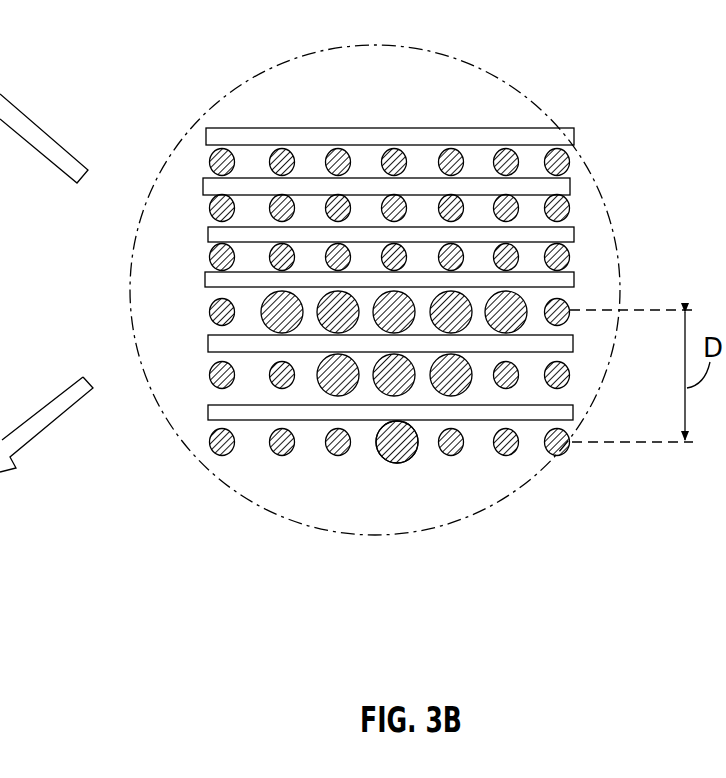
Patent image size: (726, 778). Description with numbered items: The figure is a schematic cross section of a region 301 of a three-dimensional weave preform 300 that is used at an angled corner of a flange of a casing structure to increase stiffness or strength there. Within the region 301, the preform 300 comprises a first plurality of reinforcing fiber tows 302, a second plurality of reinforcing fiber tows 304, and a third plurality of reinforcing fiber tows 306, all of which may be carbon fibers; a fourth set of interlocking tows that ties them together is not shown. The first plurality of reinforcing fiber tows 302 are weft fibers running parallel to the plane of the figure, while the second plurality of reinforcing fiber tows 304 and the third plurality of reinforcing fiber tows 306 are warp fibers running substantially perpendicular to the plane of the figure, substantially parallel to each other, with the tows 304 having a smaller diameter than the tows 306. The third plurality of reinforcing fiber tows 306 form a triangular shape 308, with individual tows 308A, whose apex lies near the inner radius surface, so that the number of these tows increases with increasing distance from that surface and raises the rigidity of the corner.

The 3D weave preform 300 is at (508, 44).
The region 301 is at (528, 480).
The first plurality of reinforcing fiber tows 302 is at (207, 411).
The second plurality of reinforcing fiber tows 304 is at (277, 457).
The third plurality of reinforcing fiber tows 306 is at (347, 387).
The triangular shape 308 is at (408, 468).
The large strand cross-section 308A is at (398, 463).